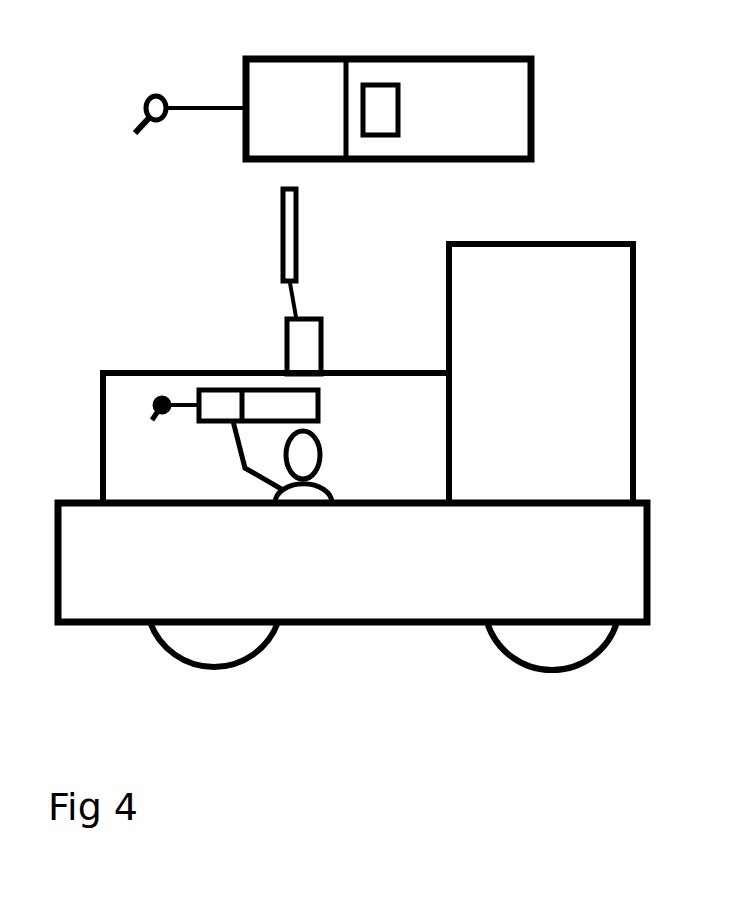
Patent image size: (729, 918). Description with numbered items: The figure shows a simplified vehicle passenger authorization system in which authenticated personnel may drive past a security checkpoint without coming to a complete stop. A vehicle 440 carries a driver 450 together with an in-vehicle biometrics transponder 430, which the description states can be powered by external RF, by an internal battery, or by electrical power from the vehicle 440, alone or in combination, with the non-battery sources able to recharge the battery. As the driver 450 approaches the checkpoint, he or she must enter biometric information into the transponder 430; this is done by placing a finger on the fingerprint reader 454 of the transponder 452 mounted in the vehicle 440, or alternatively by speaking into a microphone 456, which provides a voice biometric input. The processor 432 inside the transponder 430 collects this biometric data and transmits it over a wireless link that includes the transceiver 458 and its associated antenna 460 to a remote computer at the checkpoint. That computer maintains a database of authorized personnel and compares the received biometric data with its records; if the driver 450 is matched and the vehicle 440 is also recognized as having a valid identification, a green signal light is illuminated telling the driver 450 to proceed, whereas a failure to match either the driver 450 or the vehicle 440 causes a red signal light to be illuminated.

The transponder 430 is at (535, 130).
The processor 432 is at (400, 115).
The vehicle 440 is at (287, 622).
The driver 450 is at (322, 488).
The transponder 452 is at (320, 412).
The fingerprint reader 454 is at (210, 422).
The microphone 456 is at (162, 416).
The transceiver 458 is at (287, 335).
The antenna 460 is at (281, 222).